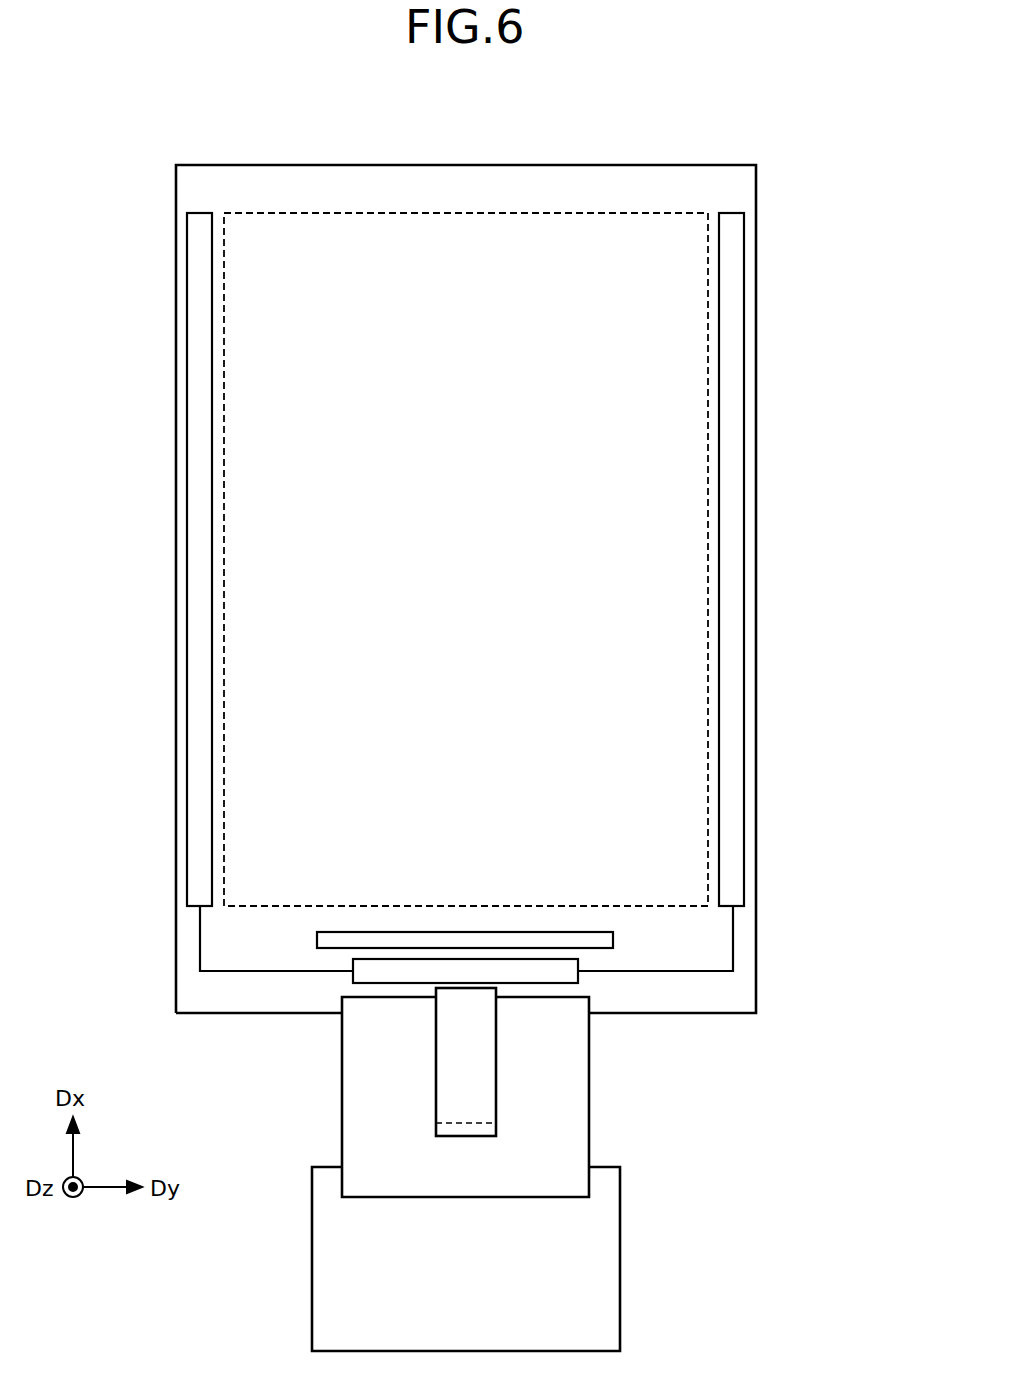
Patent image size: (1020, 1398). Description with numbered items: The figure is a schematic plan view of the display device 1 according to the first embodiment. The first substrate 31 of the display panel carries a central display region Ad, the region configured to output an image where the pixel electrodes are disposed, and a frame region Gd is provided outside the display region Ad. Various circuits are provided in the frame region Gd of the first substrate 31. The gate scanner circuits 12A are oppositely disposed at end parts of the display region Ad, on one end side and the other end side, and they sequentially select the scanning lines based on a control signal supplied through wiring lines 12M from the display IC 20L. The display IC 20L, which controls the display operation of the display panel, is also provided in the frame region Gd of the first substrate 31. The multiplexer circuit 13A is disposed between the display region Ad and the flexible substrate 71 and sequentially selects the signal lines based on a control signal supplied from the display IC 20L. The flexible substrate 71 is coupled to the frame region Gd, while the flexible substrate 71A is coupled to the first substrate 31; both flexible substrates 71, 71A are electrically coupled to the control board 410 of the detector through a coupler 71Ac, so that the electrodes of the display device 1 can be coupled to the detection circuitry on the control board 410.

The display device 1 is at (806, 126).
The first substrate 31 is at (630, 165).
The frame region Gd is at (176, 193).
The gate scanner circuits 12A is at (200, 212).
The display region Ad is at (467, 212).
The wiring lines 12M is at (733, 916).
The multiplexer circuit 13A is at (613, 940).
The display IC 20L is at (578, 978).
The flexible substrate 71 is at (589, 1118).
The flexible substrate 71A is at (435, 1107).
The coupler 71Ac is at (466, 1125).
The control board 410 is at (620, 1255).